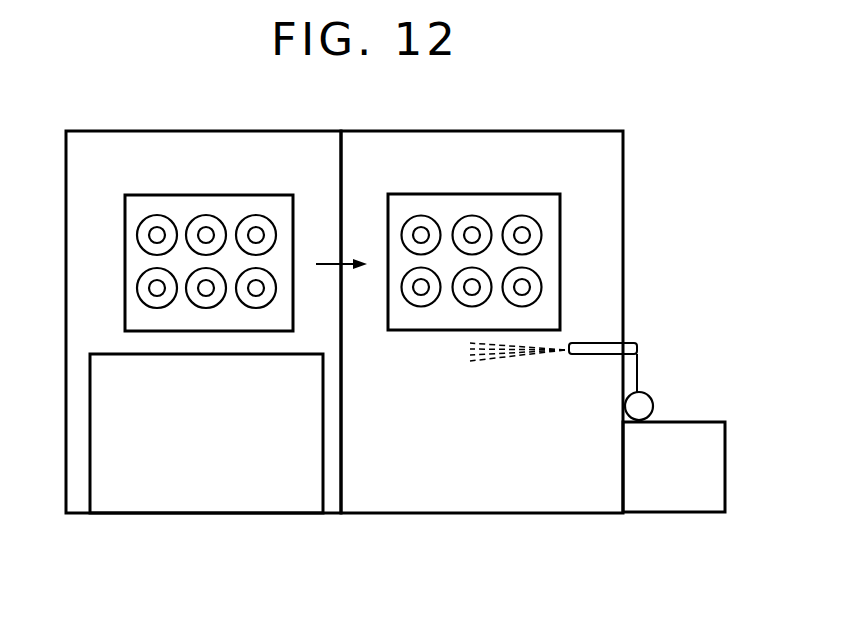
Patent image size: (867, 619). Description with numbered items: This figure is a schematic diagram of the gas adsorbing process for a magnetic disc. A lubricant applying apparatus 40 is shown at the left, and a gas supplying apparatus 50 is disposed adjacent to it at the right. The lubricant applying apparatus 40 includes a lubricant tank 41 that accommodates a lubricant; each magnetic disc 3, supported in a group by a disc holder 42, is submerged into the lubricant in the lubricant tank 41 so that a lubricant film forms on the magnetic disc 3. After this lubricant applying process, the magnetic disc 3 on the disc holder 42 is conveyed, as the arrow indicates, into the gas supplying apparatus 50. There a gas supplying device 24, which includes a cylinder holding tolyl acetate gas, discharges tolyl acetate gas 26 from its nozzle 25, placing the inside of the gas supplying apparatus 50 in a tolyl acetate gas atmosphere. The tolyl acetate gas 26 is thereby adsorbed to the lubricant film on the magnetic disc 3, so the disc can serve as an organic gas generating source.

The lubricant applying apparatus 40 is at (201, 126).
The gas supplying apparatus 50 is at (448, 126).
The disc holder 42 is at (135, 213).
The magnetic disc 3 is at (137, 292).
The lubricant tank 41 is at (186, 495).
The nozzle 25 is at (583, 358).
The tolyl acetate gas 26 is at (500, 362).
The gas supplying device 24 is at (686, 414).